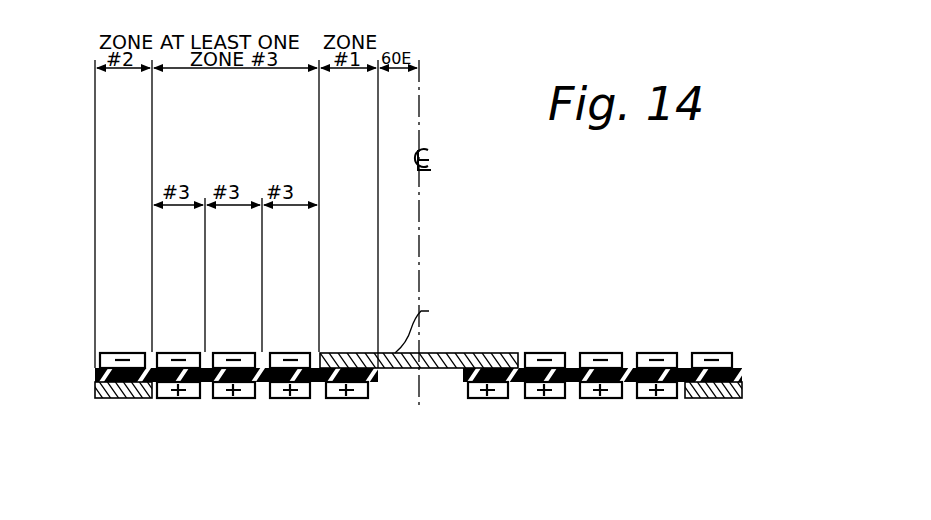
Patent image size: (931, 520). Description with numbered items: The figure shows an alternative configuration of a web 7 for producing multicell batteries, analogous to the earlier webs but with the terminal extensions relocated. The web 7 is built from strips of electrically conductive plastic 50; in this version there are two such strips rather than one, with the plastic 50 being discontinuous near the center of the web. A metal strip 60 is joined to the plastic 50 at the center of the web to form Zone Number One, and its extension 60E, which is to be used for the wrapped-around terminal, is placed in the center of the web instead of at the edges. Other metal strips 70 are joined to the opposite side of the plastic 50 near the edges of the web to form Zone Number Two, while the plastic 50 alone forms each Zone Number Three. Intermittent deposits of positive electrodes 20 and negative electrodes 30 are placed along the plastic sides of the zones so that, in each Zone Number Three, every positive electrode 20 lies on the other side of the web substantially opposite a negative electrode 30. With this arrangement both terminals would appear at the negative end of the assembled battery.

The web 7 is at (515, 350).
The positive electrode 20 is at (245, 398).
The negative electrode 30 is at (242, 352).
The electrically conductive plastic 50 is at (98, 374).
The metal strip 60 is at (334, 352).
The extension of the metal strip 60E is at (437, 324).
The metal strip 70 is at (128, 398).